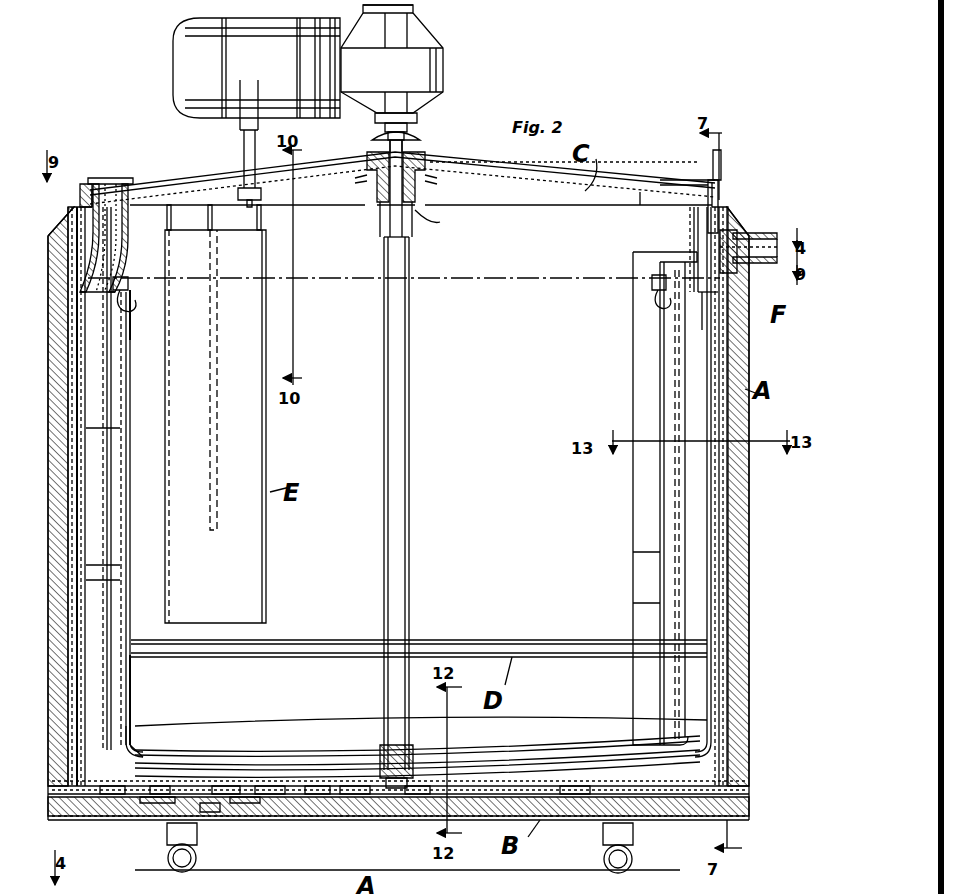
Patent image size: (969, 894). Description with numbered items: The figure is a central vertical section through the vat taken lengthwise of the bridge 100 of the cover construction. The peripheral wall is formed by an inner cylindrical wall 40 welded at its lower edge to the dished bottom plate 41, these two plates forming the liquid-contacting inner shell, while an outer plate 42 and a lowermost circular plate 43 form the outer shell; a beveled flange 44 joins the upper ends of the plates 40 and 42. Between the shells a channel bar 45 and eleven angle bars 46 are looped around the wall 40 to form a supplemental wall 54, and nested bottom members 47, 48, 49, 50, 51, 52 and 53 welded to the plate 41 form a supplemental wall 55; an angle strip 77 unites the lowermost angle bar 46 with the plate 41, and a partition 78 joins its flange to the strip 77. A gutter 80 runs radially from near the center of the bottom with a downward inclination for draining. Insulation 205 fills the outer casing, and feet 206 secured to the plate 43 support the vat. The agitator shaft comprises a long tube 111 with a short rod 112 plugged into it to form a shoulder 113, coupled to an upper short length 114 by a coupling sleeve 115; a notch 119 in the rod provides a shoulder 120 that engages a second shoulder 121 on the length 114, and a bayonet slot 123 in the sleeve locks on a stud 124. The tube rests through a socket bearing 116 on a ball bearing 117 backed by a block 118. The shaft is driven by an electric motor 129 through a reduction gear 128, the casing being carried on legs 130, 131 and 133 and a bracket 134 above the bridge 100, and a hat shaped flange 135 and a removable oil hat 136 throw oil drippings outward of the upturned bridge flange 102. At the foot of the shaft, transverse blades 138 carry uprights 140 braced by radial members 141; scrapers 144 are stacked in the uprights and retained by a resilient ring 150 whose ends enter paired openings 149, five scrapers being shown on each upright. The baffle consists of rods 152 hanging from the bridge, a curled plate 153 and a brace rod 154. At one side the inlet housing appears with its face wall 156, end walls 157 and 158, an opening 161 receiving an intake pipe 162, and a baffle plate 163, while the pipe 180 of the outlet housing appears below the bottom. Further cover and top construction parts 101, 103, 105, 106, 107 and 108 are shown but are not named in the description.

The inner cylindrical wall plate 40 is at (86, 580).
The bottom plate 41 is at (556, 784).
The outer wall plate 42 is at (750, 521).
The lowermost bottom plate 43 is at (262, 820).
The beveled flange 44 is at (70, 209).
The channel bar 45 is at (690, 268).
The angle bar 46 is at (737, 348).
The central bottom channel member 47 is at (352, 814).
The bottom channel ring 48 is at (255, 822).
The bottom channel ring 49 is at (222, 829).
The bottom channel loop 50 is at (210, 822).
The bottom channel loop 51 is at (163, 826).
The bottom channel loop 52 is at (163, 826).
The bottom channel loop 53 is at (105, 820).
The angle iron wall 54 is at (748, 558).
The angle iron bottom wall 55 is at (573, 798).
The angle strip 77 is at (80, 820).
The partition 78 is at (120, 750).
The gutter 80 is at (415, 772).
The bridge 100 is at (535, 177).
The cover inner plate 101 is at (582, 189).
The upturned flange 102 is at (413, 187).
The elbow pipe 103 is at (125, 182).
The cover rim 105 is at (552, 173).
The cover bracket 106 is at (97, 178).
The pipe nipple 107 is at (85, 184).
The cover frame 108 is at (695, 183).
The shaft tube 111 is at (420, 565).
The short rod 112 is at (384, 228).
The shoulder 113 is at (412, 236).
The upper short shaft length 114 is at (415, 117).
The coupling sleeve 115 is at (385, 189).
The socket bearing 116 is at (398, 766).
The ball bearing 117 is at (322, 752).
The backing member 118 is at (415, 823).
The notch 119 is at (382, 204).
The shoulder 120 is at (370, 185).
The second shoulder 121 is at (418, 209).
The bayonet slot 123 is at (426, 150).
The stud 124 is at (432, 131).
The reduction gear 128 is at (440, 50).
The electric motor 129 is at (222, 118).
The leg 130 is at (244, 151).
The leg 131 is at (238, 183).
The leg 133 is at (293, 158).
The bracket 134 is at (378, 117).
The hat shaped flange 135 is at (372, 137).
The oil hat 136 is at (526, 165).
The transverse blades 138 is at (300, 708).
The upright 140 is at (132, 620).
The radial bracing member 141 is at (310, 628).
The scraper 144 is at (108, 508).
The openings 149 is at (635, 279).
The retaining ring 150 is at (135, 303).
The baffle rods 152 is at (252, 233).
The baffle plate 153 is at (268, 436).
The brace rod 154 is at (205, 382).
The face wall 156 is at (735, 284).
The end wall 157 is at (702, 243).
The end wall 158 is at (705, 318).
The opening 161 is at (752, 235).
The intake pipe 162 is at (774, 235).
The baffle plate 163 is at (642, 195).
The outlet pipe 180 is at (318, 833).
The insulation 205 is at (82, 556).
The feet 206 is at (645, 847).